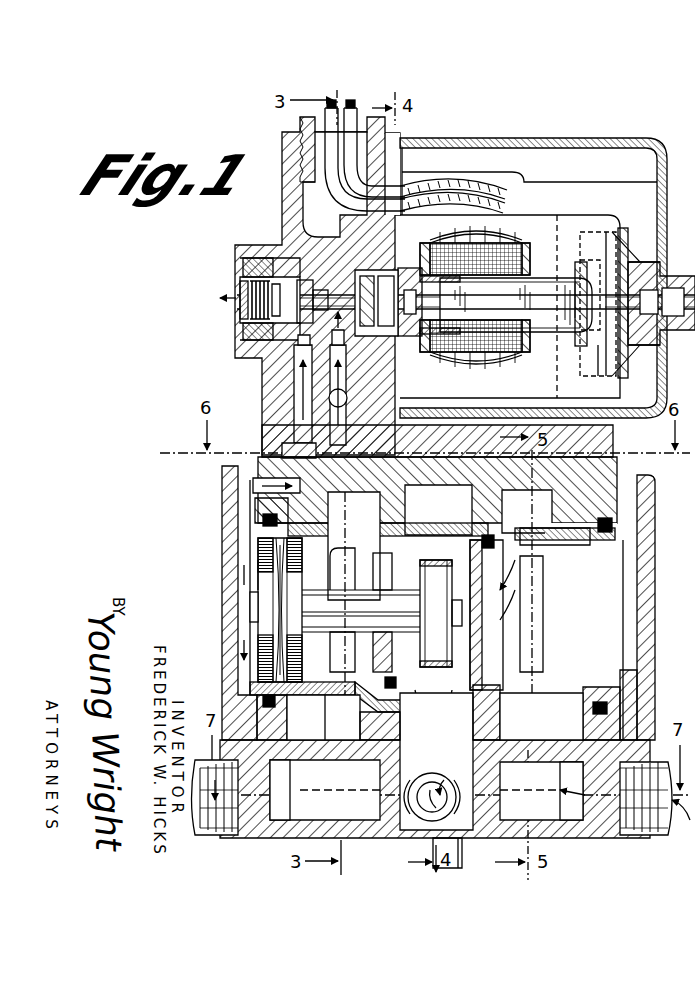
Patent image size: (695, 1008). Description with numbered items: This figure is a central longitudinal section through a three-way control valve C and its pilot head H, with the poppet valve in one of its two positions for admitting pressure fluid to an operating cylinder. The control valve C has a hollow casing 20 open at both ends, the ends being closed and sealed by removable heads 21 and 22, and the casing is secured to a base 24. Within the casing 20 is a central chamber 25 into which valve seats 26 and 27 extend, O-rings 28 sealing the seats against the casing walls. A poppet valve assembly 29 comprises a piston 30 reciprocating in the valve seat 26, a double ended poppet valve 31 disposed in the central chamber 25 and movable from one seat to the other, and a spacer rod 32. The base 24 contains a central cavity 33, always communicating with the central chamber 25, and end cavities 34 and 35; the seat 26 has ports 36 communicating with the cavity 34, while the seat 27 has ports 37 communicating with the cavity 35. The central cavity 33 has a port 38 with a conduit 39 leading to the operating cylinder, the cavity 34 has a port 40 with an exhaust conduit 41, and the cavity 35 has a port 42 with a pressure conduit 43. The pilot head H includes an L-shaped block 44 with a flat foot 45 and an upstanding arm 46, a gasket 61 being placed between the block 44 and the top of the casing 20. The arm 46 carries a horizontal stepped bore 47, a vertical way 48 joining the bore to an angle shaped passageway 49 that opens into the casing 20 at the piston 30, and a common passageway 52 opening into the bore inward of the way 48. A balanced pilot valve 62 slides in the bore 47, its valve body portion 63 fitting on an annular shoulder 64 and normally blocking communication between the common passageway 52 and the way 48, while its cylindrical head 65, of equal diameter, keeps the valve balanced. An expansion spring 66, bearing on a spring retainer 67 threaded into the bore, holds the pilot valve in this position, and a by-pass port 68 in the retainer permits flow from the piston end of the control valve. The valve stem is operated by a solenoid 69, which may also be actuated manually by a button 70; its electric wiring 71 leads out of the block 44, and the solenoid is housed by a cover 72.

The hollow casing 20 is at (640, 470).
The removable head 21 is at (222, 490).
The removable head 22 is at (655, 492).
The base 24 is at (648, 745).
The central chamber 25 is at (470, 512).
The valve seat 26 is at (345, 530).
The valve seat 27 is at (540, 528).
The O-rings 28 is at (263, 518).
The poppet valve assembly 29 is at (258, 636).
The piston 30 is at (268, 596).
The double ended poppet valve 31 is at (436, 562).
The spacer rod 32 is at (323, 600).
The central cavity 33 is at (395, 838).
The end cavity 34 is at (290, 812).
The end cavity 35 is at (562, 838).
The ports 36 is at (338, 660).
The ports 37 is at (536, 662).
The port 38 is at (460, 793).
The conduit or pipe 39 is at (462, 862).
The port 40 is at (290, 770).
The conduit or pipe 41 is at (205, 822).
The port 42 is at (595, 774).
The pipe or conduit 43 is at (658, 835).
The block 44 is at (282, 238).
The foot 45 is at (614, 436).
The upstanding arm 46 is at (262, 378).
The stepped bore 47 is at (362, 272).
The way 48 is at (294, 380).
The angle shaped passageway 49 is at (282, 452).
The common passageway 52 is at (346, 372).
The gasket 61 is at (262, 455).
The balanced pilot valve 62 is at (408, 270).
The valve body portion 63 is at (332, 175).
The annular shoulder 64 is at (348, 175).
The cylindrical head 65 is at (506, 304).
The expansion spring 66 is at (258, 270).
The spring retainer 67 is at (243, 332).
The by-pass port 68 is at (240, 300).
The solenoid 69 is at (508, 245).
The button 70 is at (690, 332).
The electric wiring 71 is at (465, 192).
The cover 72 is at (628, 140).
The pilot head H is at (282, 213).
The control valve C is at (222, 478).